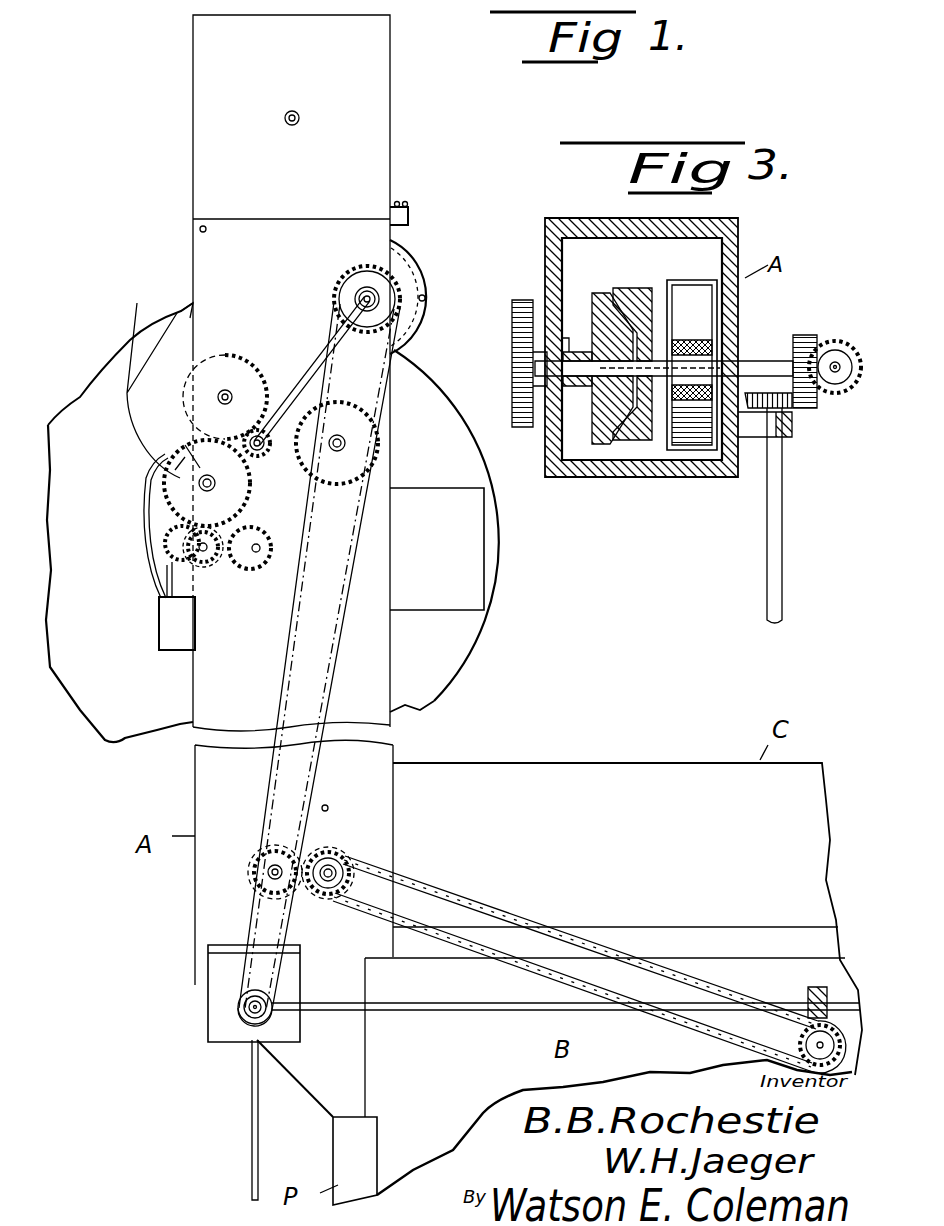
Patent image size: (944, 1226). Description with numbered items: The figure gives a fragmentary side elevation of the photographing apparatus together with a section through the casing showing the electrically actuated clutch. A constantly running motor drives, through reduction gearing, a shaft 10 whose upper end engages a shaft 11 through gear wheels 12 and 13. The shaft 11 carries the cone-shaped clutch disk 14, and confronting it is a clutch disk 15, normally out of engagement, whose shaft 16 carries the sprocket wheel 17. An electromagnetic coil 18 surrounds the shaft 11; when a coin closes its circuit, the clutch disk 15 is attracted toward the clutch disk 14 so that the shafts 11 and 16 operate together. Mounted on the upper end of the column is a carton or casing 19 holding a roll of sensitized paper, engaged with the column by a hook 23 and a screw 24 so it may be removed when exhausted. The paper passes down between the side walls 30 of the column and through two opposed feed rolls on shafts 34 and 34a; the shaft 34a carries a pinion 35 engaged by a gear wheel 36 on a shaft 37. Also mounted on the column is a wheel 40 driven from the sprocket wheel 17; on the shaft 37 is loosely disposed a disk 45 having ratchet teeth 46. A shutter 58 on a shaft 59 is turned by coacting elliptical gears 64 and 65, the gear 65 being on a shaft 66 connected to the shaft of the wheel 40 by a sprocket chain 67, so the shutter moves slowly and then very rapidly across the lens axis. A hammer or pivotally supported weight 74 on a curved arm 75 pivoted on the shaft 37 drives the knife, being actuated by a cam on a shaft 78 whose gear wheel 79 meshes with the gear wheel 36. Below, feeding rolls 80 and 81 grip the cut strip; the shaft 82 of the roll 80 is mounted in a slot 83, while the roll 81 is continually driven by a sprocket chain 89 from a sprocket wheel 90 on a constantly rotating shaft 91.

In FIG. 1, the carton or casing 19 is at (378, 150).
In FIG. 1, the hook 23 is at (198, 232).
In FIG. 1, the screw 24 is at (405, 208).
In FIG. 1, the wheel 40 is at (410, 324).
In FIG. 1, the sprocket chain 67 is at (335, 378).
In FIG. 1, the shutter 58 is at (469, 635).
In FIG. 1, the side walls 30 is at (378, 657).
In FIG. 1, the slot 83 is at (319, 664).
In FIG. 1, the gear wheel 36 is at (255, 378).
In FIG. 1, the shaft 37 is at (227, 390).
In FIG. 1, the pinion 35 is at (268, 435).
In FIG. 1, the shaft 34 is at (345, 442).
In FIG. 1, the shaft 34a is at (293, 493).
In FIG. 1, the shaft 78 is at (208, 477).
In FIG. 1, the gear wheel 79 is at (190, 455).
In FIG. 1, the shaft 66 is at (210, 560).
In FIG. 1, the elliptical gear 64 is at (244, 562).
In FIG. 1, the elliptical gear 65 is at (176, 552).
In FIG. 1, the shaft 59 is at (288, 522).
In FIG. 1, the curved arm 75 is at (148, 505).
In FIG. 1, the hammer or pivotally supported weight 74 is at (173, 658).
In FIG. 1, the disk 45 is at (148, 430).
In FIG. 1, the ratchet teeth 46 is at (178, 313).
In FIG. 1, the feeding roll 80 is at (265, 885).
In FIG. 1, the shaft 82 is at (278, 863).
In FIG. 1, the feeding roll 81 is at (346, 870).
In FIG. 1, the sprocket chain 89 is at (628, 956).
In FIG. 1, the shaft 91 is at (800, 1045).
In FIG. 1, the sprocket wheel 90 is at (605, 942).
In FIG. 1, the gear wheel 13 is at (232, 992).
In FIG. 3, the gear wheel 13 is at (800, 345).
In FIG. 1, the shaft 11 is at (240, 1017).
In FIG. 3, the shaft 11 is at (752, 362).
In FIG. 1, the gear wheel 12 is at (245, 1028).
In FIG. 3, the gear wheel 12 is at (795, 408).
In FIG. 1, the shaft 10 is at (248, 1138).
In FIG. 3, the shaft 10 is at (775, 592).
In FIG. 3, the sprocket wheel 17 is at (530, 430).
In FIG. 3, the shaft 16 is at (584, 388).
In FIG. 3, the clutch disk 15 is at (618, 430).
In FIG. 3, the cone-shaped clutch disk 14 is at (646, 442).
In FIG. 3, the electromagnetic coil 18 is at (694, 435).